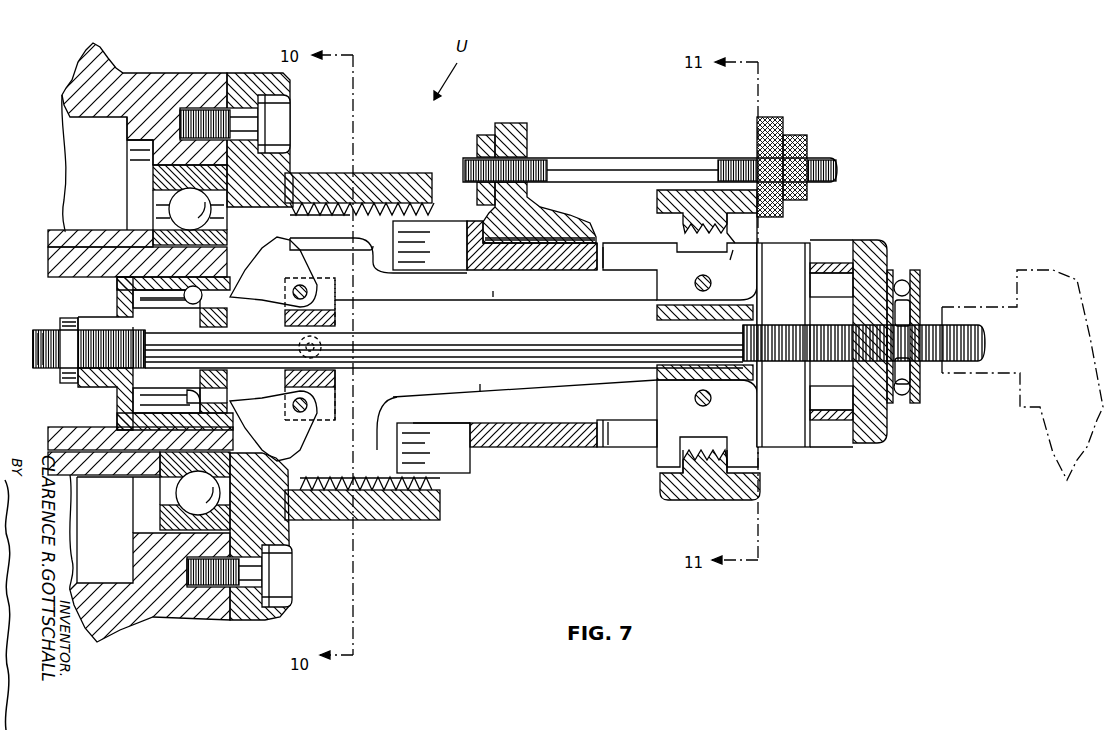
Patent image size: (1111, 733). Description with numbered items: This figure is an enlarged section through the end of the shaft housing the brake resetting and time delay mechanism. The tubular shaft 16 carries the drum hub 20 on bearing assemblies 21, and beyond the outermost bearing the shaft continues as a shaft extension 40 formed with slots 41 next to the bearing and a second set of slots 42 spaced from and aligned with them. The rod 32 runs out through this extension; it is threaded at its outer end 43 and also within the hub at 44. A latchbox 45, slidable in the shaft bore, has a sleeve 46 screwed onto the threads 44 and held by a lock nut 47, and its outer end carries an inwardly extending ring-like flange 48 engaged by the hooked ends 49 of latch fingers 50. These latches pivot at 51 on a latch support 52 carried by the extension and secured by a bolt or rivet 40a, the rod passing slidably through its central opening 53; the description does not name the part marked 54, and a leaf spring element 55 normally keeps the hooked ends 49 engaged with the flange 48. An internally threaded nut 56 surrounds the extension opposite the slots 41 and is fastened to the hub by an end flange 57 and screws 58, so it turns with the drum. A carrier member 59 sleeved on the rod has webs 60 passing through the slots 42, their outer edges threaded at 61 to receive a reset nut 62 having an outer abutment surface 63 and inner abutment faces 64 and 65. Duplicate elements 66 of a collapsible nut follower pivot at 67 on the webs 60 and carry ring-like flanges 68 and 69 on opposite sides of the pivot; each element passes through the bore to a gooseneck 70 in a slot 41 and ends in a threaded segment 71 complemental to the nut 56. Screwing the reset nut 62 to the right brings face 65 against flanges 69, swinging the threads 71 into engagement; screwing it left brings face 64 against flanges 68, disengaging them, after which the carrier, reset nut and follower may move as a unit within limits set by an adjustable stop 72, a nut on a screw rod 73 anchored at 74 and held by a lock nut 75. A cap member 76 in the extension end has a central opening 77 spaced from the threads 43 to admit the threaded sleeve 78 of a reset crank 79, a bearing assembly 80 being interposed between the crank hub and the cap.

The tubular shaft 16 is at (48, 268).
The hub portion 20 is at (180, 73).
The bearing assemblies 21 is at (165, 178).
The rod 32 is at (33, 352).
The shaft extension 40 is at (493, 447).
The bolt or rivet 40a is at (323, 347).
The slots 41 is at (456, 466).
The second set of slots 42 is at (622, 445).
The threads 43 is at (794, 362).
The threads 44 is at (60, 332).
The latchbox 45 is at (118, 405).
The sleeve 46 is at (97, 317).
The lock nut 47 is at (72, 385).
The ring-like flange 48 is at (191, 305).
The hooked ends 49 is at (188, 397).
The latch fingers 50 is at (257, 270).
The pivots 51 is at (293, 292).
The latch support 52 is at (337, 318).
The central opening 53 is at (337, 378).
The slide block 54 is at (310, 263).
The leaf spring element 55 is at (220, 380).
The internally threaded nut 56 is at (393, 178).
The end flange 57 is at (241, 73).
The screws 58 is at (290, 127).
The carrier member 59 is at (755, 316).
The webs 60 is at (757, 297).
The threads 61 is at (683, 485).
The reset nut 62 is at (713, 500).
The outer abutment surface 63 is at (762, 487).
The inner abutment face 64 is at (660, 222).
The inner abutment face 65 is at (757, 240).
The complemental elements 66 is at (473, 344).
The pivot 67 is at (695, 283).
The ring-like flange 68 is at (650, 243).
The ring-like flange 69 is at (726, 263).
The gooseneck construction 70 is at (398, 240).
The threads 71 is at (326, 205).
The adjustable stop 72 is at (777, 117).
The screw rod 73 is at (673, 160).
The anchor 74 is at (513, 170).
The lock nut 75 is at (807, 146).
The cap member 76 is at (880, 245).
The central opening 77 is at (855, 380).
The threaded sleeve 78 is at (990, 360).
The reset crank 79 is at (1040, 265).
The bearing assembly 80 is at (915, 278).